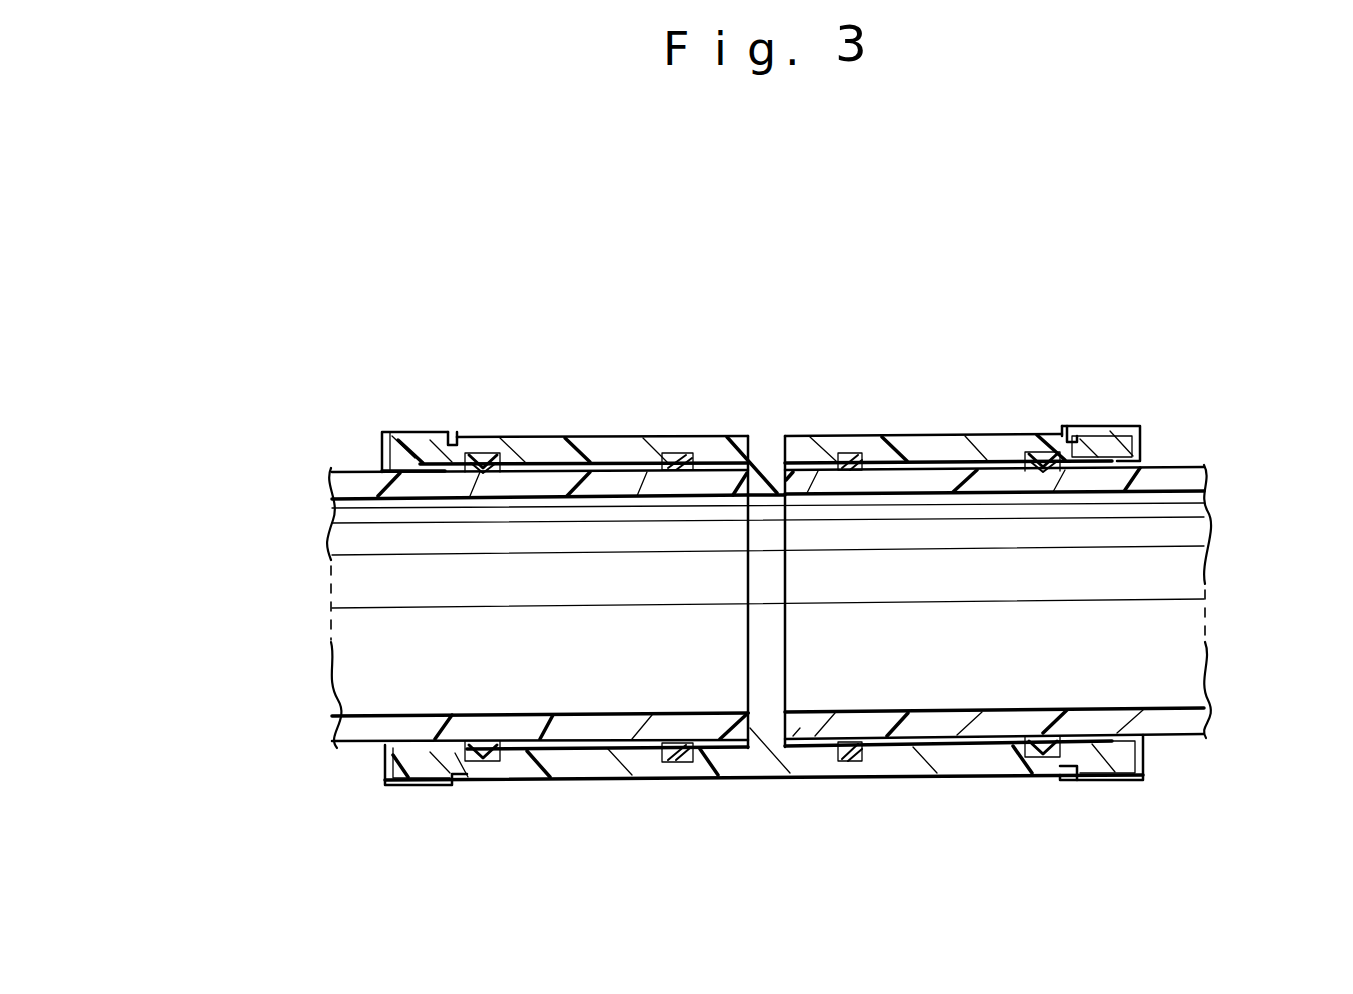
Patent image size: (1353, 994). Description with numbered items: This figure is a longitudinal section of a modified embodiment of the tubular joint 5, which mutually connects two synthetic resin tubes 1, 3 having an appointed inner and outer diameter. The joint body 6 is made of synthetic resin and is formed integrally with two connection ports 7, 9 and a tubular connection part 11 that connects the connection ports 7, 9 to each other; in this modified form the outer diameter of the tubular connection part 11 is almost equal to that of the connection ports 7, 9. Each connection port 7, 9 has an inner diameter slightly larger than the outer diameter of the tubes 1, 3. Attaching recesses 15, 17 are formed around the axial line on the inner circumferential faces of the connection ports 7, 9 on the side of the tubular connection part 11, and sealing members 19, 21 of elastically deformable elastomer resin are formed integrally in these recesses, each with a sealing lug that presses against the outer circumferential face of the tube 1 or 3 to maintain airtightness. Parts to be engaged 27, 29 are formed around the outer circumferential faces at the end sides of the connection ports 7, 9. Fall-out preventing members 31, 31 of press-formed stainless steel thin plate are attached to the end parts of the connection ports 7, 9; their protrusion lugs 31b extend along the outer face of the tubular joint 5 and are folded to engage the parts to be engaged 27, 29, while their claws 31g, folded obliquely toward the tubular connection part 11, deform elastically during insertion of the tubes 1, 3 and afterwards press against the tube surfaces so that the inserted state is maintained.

The synthetic resin tube 1 is at (362, 486).
The synthetic resin tube 3 is at (1176, 478).
The tubular joint 5 is at (905, 294).
The joint body 6 is at (777, 432).
The connection port 7 is at (549, 452).
The connection port 9 is at (1005, 440).
The tubular connection part 11 is at (735, 428).
The attaching recess 15 is at (672, 762).
The attaching recess 17 is at (855, 761).
The sealing member 19 is at (662, 466).
The sealing member 21 is at (866, 472).
The part to be engaged 27 is at (460, 786).
The part to be engaged 29 is at (1066, 778).
The fall-out preventing member 31 is at (418, 430).
The protrusion lug 31b is at (452, 432).
The claw 31g is at (482, 470).